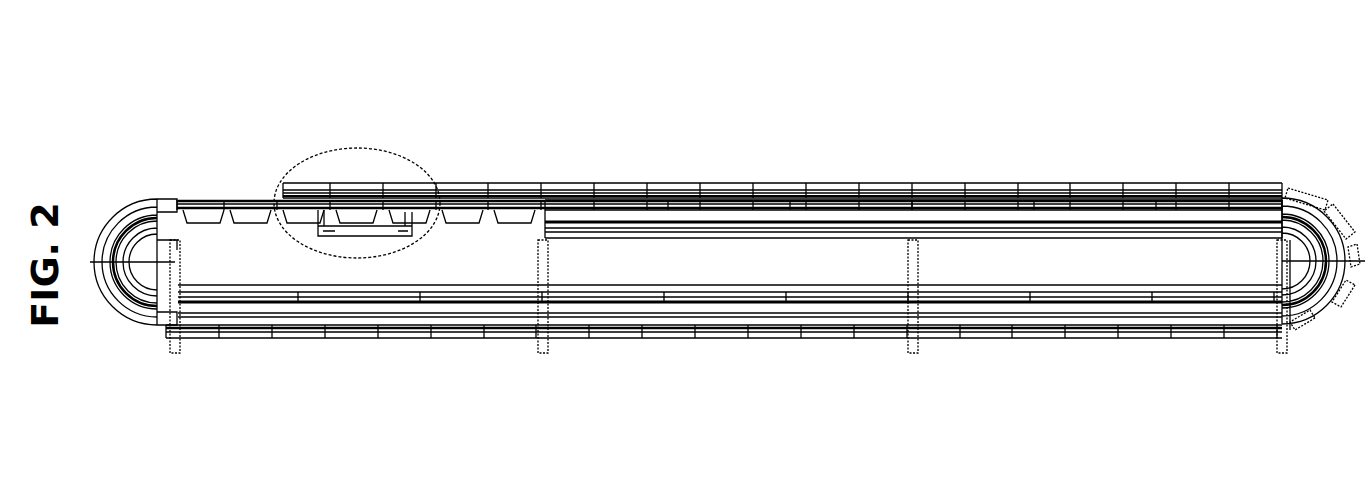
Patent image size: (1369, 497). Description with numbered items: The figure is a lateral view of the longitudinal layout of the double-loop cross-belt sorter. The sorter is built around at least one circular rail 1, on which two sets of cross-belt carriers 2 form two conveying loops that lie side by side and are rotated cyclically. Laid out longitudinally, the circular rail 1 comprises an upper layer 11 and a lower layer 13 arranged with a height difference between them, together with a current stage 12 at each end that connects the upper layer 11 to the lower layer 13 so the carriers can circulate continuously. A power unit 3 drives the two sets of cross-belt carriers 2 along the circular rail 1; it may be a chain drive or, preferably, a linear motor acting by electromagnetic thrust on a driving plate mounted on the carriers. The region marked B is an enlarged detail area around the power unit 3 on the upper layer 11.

The circular rail 1 is at (600, 217).
The cross-belt carriers 2 is at (515, 183).
The power unit 3 is at (405, 218).
The upper layer 11 is at (870, 192).
The current stage 12 is at (137, 198).
The lower layer 13 is at (795, 318).
The detail region B is at (370, 148).